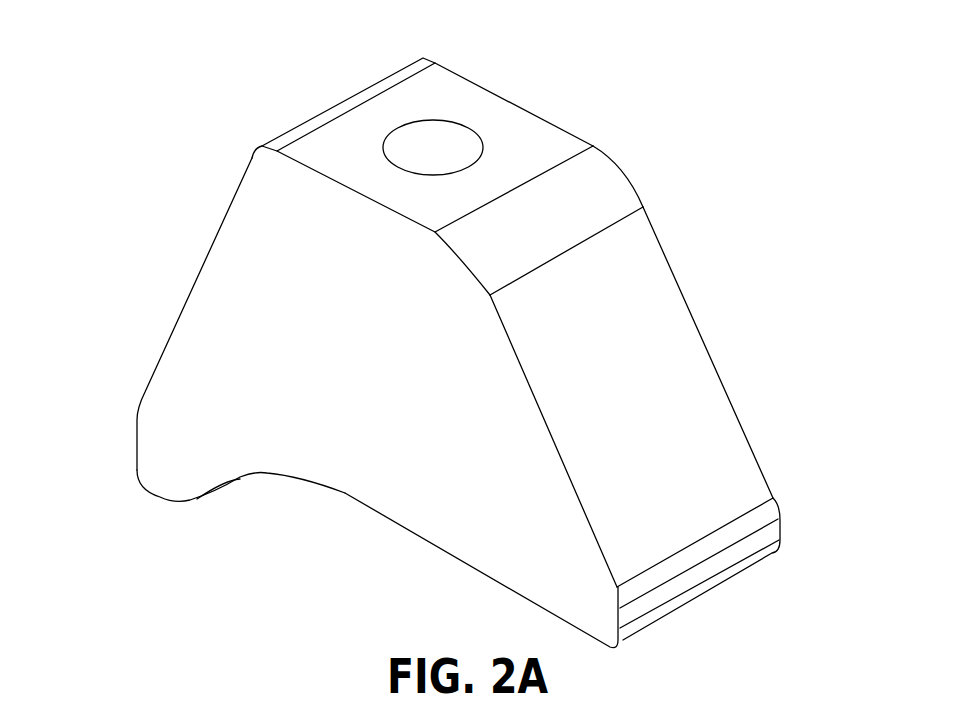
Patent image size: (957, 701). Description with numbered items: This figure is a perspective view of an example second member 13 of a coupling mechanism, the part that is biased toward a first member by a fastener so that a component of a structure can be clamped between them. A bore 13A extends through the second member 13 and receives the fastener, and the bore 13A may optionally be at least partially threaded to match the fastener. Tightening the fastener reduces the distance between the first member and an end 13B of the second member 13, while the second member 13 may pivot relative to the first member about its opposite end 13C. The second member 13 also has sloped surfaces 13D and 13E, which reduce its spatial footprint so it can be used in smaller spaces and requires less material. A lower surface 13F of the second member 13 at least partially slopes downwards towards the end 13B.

The second member 13 is at (455, 325).
The bore 13A is at (447, 135).
The end 13B is at (730, 560).
The end 13C is at (135, 448).
The sloped surface 13D is at (677, 385).
The sloped surface 13E is at (192, 287).
The lower surface 13F is at (510, 587).